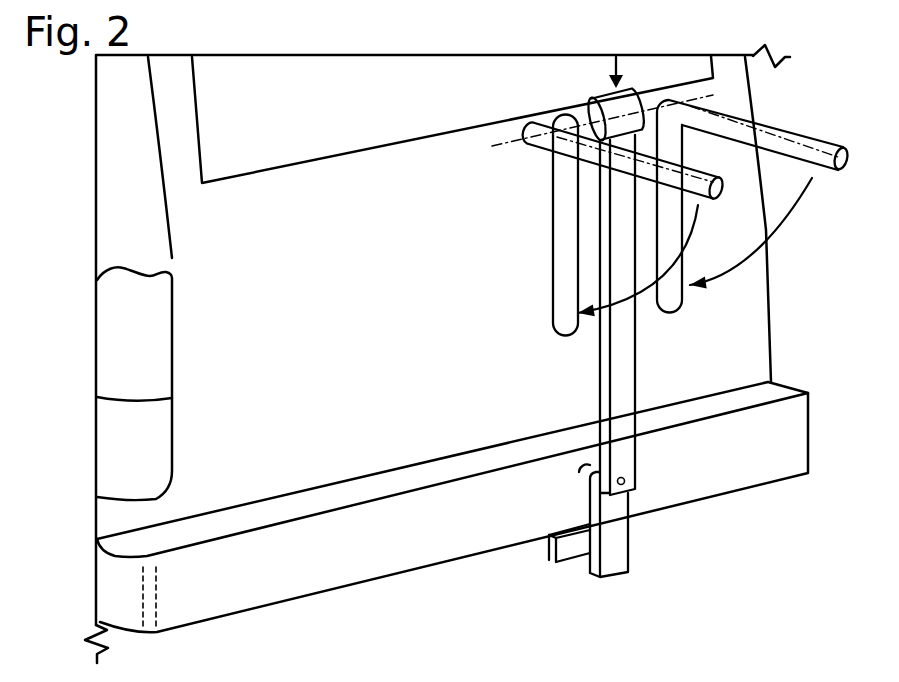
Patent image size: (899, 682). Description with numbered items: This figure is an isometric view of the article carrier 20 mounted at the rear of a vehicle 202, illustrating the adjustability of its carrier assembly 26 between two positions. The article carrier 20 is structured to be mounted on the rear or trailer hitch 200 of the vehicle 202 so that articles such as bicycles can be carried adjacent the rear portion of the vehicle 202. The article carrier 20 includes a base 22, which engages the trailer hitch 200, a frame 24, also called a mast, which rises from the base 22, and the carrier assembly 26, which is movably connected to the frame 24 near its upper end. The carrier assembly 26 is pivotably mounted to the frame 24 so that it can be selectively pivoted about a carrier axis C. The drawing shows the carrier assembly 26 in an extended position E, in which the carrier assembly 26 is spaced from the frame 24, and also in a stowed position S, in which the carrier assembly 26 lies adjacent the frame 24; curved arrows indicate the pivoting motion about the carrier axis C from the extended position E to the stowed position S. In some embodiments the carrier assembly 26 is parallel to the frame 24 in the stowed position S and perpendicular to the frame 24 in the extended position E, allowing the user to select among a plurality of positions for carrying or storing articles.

The article carrier 20 is at (802, 86).
The base 22 is at (612, 553).
The frame 24 is at (636, 389).
The carrier assembly 26 is at (650, 106).
The trailer hitch 200 is at (530, 548).
The vehicle 202 is at (378, 200).
The carrier axis C is at (493, 146).
The extended position E is at (797, 132).
The stowed position S is at (553, 308).